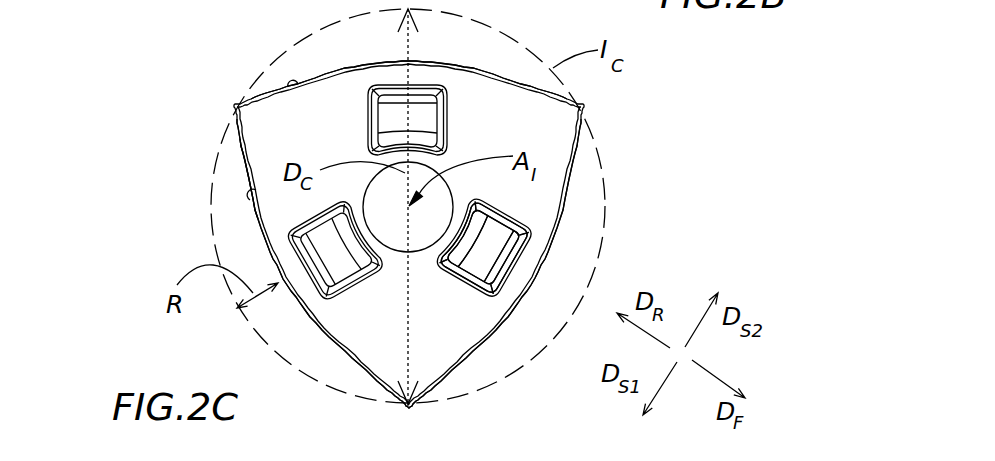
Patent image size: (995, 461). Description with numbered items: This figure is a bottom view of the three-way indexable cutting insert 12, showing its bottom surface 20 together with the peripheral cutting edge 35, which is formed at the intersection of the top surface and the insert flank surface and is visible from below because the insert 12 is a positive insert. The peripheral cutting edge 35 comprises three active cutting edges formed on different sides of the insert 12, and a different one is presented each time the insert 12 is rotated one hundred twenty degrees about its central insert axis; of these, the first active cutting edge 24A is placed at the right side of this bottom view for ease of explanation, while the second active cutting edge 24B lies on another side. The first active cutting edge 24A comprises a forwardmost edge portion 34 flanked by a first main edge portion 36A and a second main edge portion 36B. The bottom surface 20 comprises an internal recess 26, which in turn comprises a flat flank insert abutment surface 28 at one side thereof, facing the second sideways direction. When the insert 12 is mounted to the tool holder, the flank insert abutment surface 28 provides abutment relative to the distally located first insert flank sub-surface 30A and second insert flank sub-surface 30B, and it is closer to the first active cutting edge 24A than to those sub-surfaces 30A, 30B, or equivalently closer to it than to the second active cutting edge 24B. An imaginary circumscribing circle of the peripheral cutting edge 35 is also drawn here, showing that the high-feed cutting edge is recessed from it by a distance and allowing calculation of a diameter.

The insert 12 is at (192, 82).
The bottom surface 20 is at (338, 127).
The first active cutting edge 24A is at (475, 343).
The second active cutting edge 24B is at (321, 352).
The internal recess 26 is at (456, 303).
The flank insert abutment surface 28 is at (506, 272).
The first insert flank sub-surface 30A is at (253, 206).
The second insert flank sub-surface 30B is at (303, 82).
The forwardmost edge portion 34 is at (545, 276).
The peripheral cutting edge 35 is at (233, 168).
The first main edge portion 36A is at (567, 232).
The second main edge portion 36B is at (465, 358).